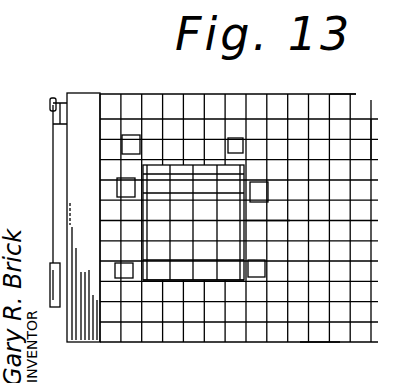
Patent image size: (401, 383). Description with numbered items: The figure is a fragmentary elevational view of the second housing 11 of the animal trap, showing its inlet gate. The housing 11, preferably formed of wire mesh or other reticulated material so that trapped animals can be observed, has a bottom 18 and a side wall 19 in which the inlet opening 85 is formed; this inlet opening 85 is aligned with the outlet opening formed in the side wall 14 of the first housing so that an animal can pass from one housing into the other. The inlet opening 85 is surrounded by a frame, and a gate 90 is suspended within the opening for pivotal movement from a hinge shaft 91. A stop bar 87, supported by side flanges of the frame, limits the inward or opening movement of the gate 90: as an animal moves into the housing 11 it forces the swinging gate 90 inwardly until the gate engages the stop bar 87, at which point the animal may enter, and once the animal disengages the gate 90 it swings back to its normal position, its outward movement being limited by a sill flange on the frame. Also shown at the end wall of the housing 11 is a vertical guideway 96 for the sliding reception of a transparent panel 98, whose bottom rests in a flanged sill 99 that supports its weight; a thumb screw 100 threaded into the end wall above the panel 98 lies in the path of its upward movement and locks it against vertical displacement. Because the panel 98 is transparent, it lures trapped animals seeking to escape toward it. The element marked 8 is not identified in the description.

The side wall 14 is at (239, 196).
The housing 11 is at (357, 96).
The side wall 19 is at (373, 133).
The tile 8 is at (260, 234).
The bottom 18 is at (317, 343).
The hinge shaft 91 is at (248, 173).
The stop bar 87 is at (205, 203).
The gate 90 is at (225, 262).
The inlet opening 85 is at (161, 266).
The vertical guideway 96 is at (60, 225).
The flanged sill 99 is at (53, 308).
The transparent panel 98 is at (52, 130).
The thumb screw 100 is at (52, 107).